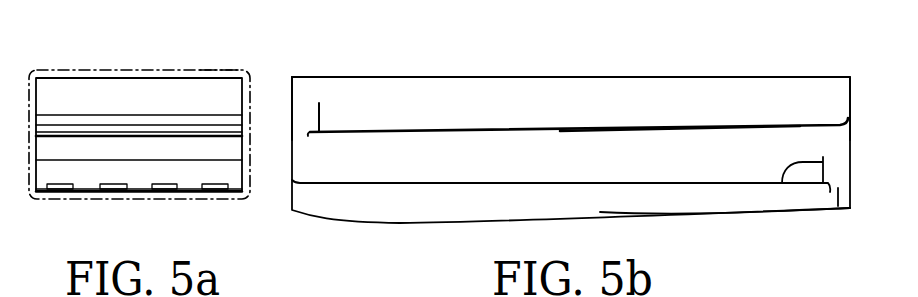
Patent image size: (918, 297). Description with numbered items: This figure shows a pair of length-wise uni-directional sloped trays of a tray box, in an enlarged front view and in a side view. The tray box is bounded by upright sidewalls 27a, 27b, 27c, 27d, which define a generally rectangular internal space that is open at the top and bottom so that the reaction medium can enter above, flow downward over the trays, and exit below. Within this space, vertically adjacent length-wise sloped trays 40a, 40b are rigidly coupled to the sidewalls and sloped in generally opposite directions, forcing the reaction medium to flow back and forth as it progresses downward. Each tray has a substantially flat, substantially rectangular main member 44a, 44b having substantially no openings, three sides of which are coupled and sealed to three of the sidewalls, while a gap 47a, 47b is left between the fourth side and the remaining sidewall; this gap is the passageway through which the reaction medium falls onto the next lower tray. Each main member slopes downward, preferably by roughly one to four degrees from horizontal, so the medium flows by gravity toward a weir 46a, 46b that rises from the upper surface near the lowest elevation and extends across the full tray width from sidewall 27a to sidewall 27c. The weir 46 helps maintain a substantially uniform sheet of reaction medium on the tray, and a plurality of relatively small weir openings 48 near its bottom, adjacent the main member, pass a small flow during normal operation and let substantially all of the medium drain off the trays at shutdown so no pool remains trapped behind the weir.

In FIG. 5a, the sidewall 27a is at (33, 86).
In FIG. 5b, the sidewall 27b is at (851, 98).
In FIG. 5a, the sidewall 27c is at (247, 84).
In FIG. 5b, the sidewall 27d is at (292, 79).
In FIG. 5a, the length-wise sloped tray 40a is at (226, 137).
In FIG. 5b, the length-wise sloped tray 40a is at (498, 130).
In FIG. 5a, the length-wise sloped tray 40b is at (88, 195).
In FIG. 5b, the length-wise sloped tray 40b is at (470, 185).
In FIG. 5b, the main member 44a is at (668, 127).
In FIG. 5b, the main member 44b is at (718, 185).
In FIG. 5a, the weir 46 is at (180, 175).
In FIG. 5b, the weir 46a is at (320, 104).
In FIG. 5b, the weir 46b is at (782, 185).
In FIG. 5b, the gap 47a is at (302, 130).
In FIG. 5b, the gap 47b is at (838, 190).
In FIG. 5a, the weir openings 48 is at (163, 193).